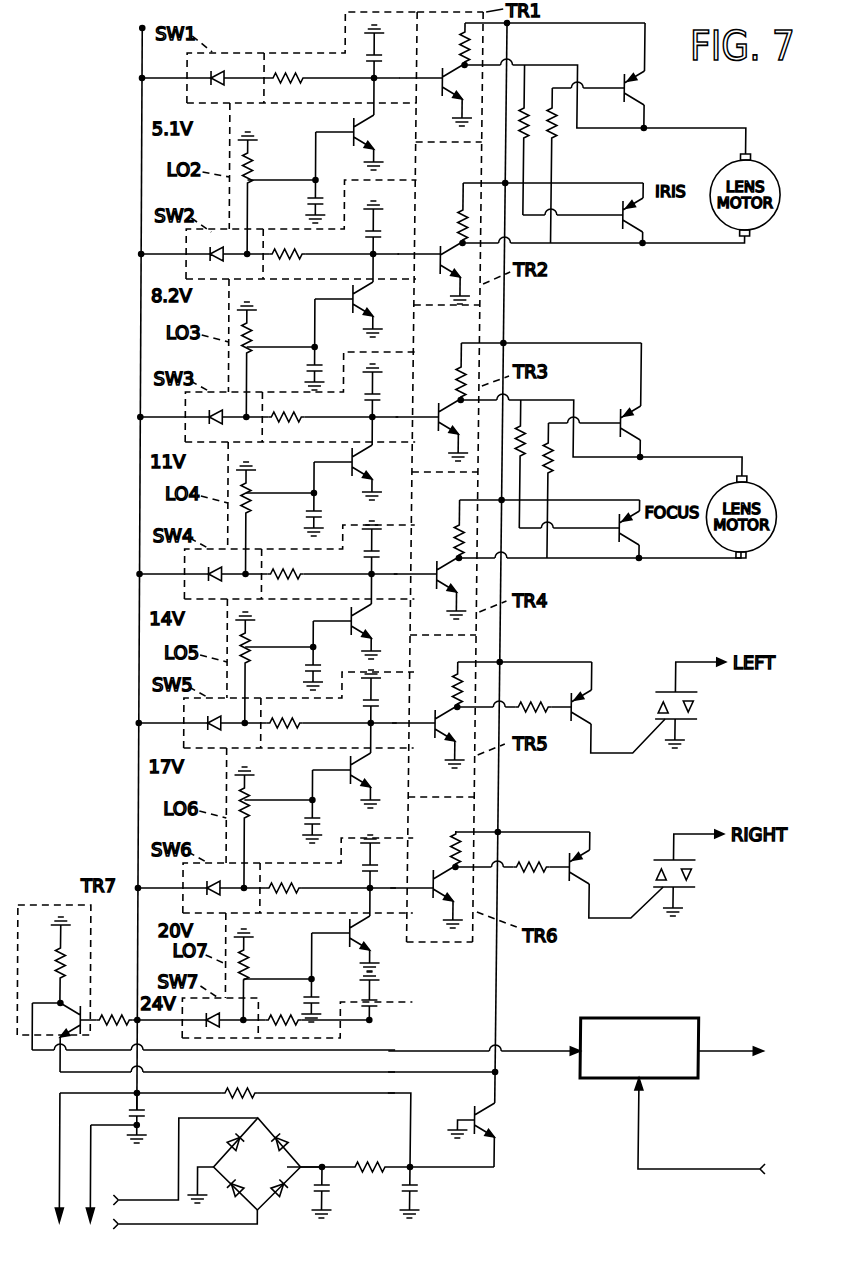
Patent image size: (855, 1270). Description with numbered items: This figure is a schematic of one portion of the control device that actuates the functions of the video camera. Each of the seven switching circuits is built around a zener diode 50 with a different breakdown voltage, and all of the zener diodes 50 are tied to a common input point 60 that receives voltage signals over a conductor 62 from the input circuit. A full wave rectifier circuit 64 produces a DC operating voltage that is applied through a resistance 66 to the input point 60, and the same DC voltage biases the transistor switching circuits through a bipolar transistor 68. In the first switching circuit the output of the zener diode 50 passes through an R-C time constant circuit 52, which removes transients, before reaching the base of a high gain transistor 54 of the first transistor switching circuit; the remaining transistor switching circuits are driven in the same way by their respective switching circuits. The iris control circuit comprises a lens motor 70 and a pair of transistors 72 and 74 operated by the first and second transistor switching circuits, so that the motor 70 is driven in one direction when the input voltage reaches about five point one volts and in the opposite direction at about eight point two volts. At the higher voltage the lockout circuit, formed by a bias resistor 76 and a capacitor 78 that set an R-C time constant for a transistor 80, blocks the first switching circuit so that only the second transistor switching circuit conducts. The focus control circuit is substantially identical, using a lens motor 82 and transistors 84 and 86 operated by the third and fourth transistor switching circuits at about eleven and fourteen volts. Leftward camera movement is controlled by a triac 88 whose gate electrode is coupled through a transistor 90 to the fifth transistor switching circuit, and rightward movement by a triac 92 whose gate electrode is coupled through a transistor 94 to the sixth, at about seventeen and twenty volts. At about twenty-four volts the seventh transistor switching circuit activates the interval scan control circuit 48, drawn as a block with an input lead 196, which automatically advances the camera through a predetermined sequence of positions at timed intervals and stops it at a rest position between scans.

The interval scan circuit 48 is at (672, 1018).
The zener diode 50 is at (218, 72).
The R-C time constant circuit 52 is at (345, 50).
The transistor 54 is at (461, 62).
The common input point 60 is at (139, 1094).
The conductor 62 is at (65, 1170).
The full wave rectifier circuit 64 is at (296, 1141).
The resistance 66 is at (222, 1095).
The bipolar transistor 68 is at (504, 1131).
The lens motor 70 is at (754, 230).
The transistor 72 is at (641, 232).
The transistor 74 is at (641, 106).
The bias resistor 76 is at (252, 182).
The capacitor 78 is at (318, 196).
The transistor 80 is at (362, 124).
The lens motor 82 is at (754, 552).
The transistor 84 is at (641, 546).
The transistor 86 is at (641, 445).
The triac 88 is at (703, 706).
The transistor 90 is at (601, 705).
The triac 92 is at (703, 874).
The transistor 94 is at (601, 874).
The input line 196 is at (653, 1143).